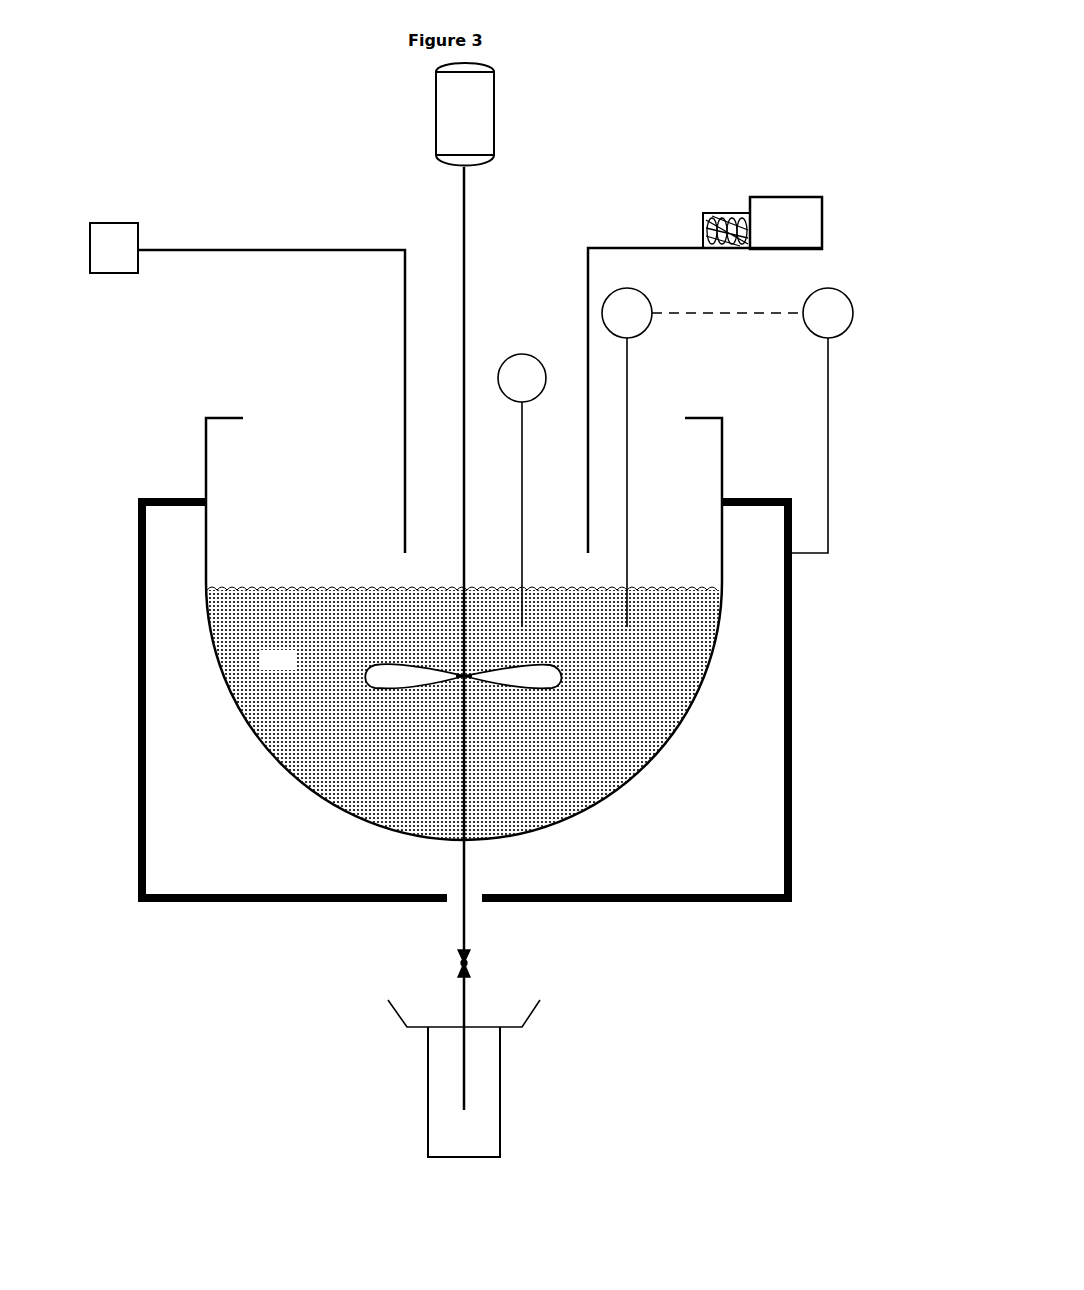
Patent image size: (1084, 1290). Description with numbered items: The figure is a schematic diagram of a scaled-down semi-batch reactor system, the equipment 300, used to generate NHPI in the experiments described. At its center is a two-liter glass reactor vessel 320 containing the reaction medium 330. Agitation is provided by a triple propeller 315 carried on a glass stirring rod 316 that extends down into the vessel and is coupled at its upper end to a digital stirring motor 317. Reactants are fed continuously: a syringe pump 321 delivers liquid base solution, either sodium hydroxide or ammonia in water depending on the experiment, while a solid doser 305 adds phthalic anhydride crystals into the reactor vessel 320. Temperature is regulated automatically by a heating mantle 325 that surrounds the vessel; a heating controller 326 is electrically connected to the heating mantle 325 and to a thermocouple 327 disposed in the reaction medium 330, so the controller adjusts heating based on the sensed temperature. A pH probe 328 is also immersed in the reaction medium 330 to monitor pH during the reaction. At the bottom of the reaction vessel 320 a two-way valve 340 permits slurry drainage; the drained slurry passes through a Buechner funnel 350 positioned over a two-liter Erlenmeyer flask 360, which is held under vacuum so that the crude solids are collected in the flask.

The equipment 300 is at (173, 107).
The solid doser 305 is at (788, 210).
The triple propeller 315 is at (390, 663).
The glass stirring rod 316 is at (470, 246).
The digital stirring motor 317 is at (485, 92).
The glass reactor vessel 320 is at (206, 452).
The syringe pump 321 is at (247, 388).
The heating mantle 325 is at (778, 810).
The heating controller 326 is at (865, 377).
The thermocouple 327 is at (638, 360).
The pH probe 328 is at (547, 368).
The reaction medium 330 is at (464, 710).
The two-way valve 340 is at (478, 958).
The Buechner funnel 350 is at (388, 1027).
The Erlenmeyer flask 360 is at (435, 1115).